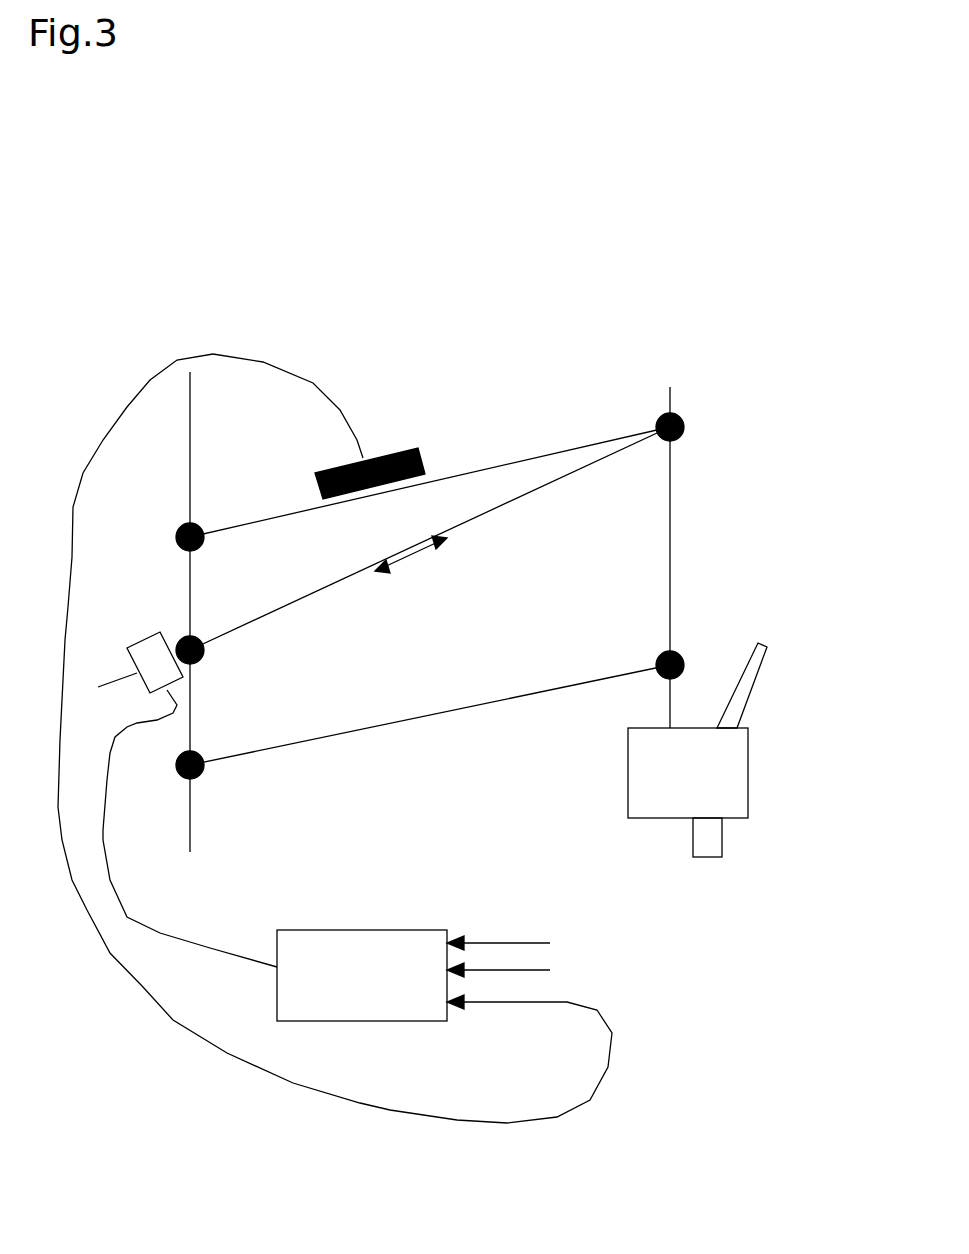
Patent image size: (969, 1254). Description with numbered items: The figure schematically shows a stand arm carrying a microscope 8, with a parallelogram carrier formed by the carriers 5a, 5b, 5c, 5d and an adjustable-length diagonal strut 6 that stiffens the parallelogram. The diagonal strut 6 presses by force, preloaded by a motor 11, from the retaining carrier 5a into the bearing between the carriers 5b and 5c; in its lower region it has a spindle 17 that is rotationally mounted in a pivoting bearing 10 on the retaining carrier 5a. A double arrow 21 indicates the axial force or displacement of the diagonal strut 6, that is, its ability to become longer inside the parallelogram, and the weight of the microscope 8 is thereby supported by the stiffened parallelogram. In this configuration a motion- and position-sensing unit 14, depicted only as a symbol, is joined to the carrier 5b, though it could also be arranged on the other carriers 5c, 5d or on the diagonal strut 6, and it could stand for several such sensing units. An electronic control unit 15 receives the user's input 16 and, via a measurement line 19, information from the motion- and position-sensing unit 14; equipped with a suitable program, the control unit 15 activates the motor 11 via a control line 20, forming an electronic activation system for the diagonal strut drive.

The retaining carrier 5a is at (187, 587).
The carrier 5b is at (498, 463).
The carrier 5c is at (670, 588).
The carrier 5d is at (435, 715).
The adjustable-length diagonal strut 6 is at (580, 477).
The microscope 8 is at (733, 792).
The pivoting bearing 10 is at (203, 660).
The motor 11 is at (157, 635).
The motion- and position-sensing unit 14 is at (402, 450).
The electronic control unit 15 is at (380, 993).
The input 16 is at (528, 972).
The spindle 17 is at (110, 687).
The measurement line 19 is at (173, 1020).
The control line 20 is at (162, 930).
The double arrow 21 is at (397, 563).